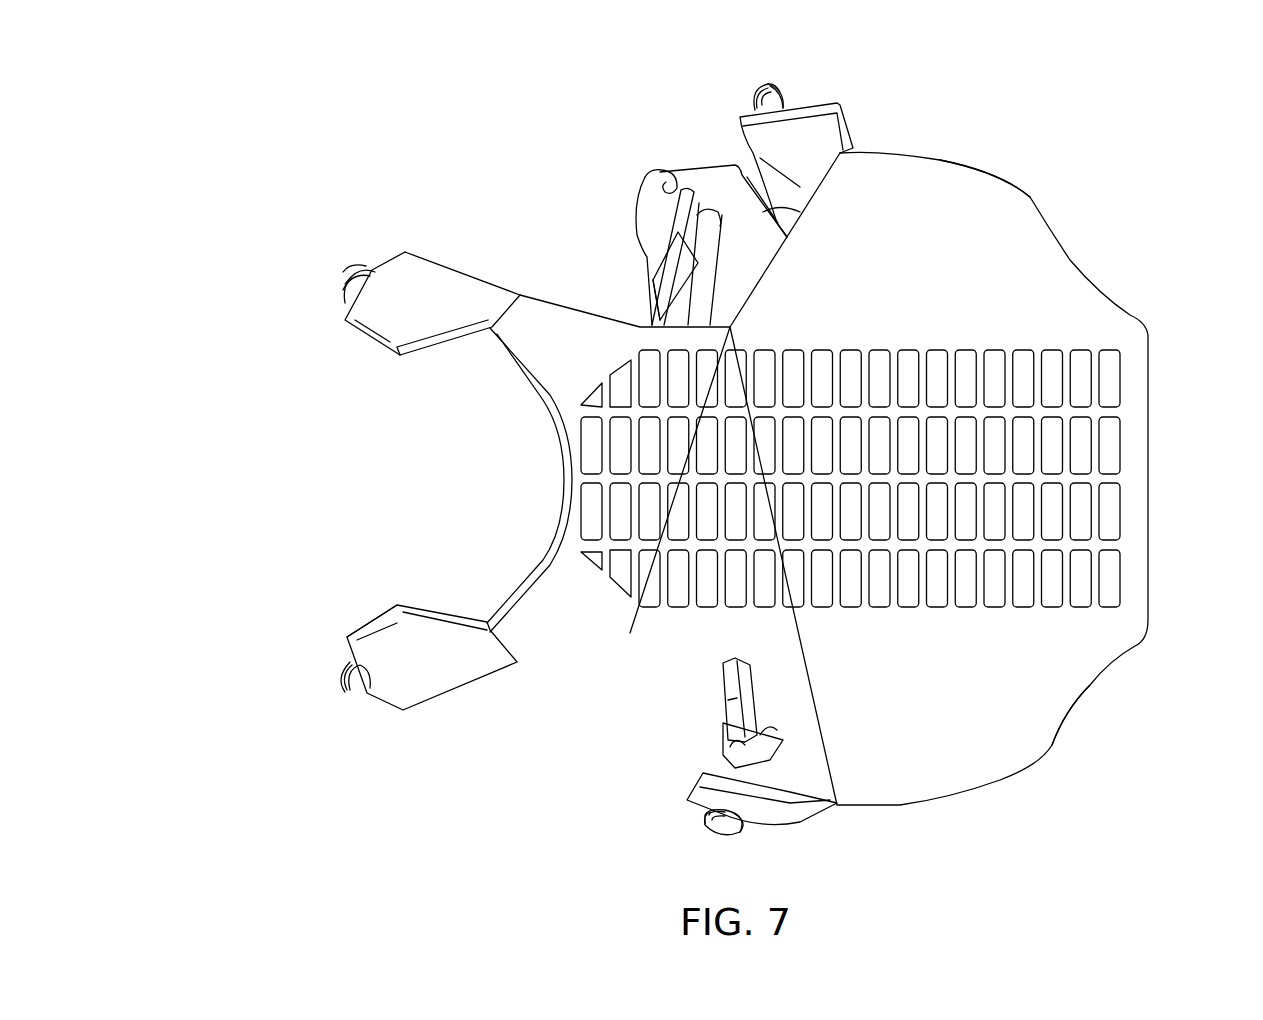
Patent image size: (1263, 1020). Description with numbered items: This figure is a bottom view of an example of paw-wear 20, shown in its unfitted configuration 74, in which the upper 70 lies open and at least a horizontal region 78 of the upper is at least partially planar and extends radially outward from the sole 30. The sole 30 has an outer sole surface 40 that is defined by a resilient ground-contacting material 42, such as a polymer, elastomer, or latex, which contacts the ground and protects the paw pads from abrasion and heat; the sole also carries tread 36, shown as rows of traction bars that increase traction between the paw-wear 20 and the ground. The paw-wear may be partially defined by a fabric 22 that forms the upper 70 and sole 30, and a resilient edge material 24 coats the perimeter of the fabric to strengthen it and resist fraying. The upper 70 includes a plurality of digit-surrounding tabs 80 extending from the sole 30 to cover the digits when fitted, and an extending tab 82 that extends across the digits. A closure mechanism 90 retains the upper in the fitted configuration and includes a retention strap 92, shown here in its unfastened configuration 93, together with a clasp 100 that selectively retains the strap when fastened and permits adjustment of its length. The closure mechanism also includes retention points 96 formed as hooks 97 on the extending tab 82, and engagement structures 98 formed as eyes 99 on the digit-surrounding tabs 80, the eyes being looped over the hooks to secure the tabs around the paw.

The paw-wear 20 is at (1199, 179).
The sole 30 is at (1038, 187).
The outer sole surface 40 is at (1036, 267).
The resilient ground-contacting material 42 is at (1020, 665).
The tread 36 is at (1080, 592).
The resilient edge material 24 is at (530, 377).
The unfitted configuration 74 is at (286, 455).
The upper 70 is at (409, 214).
The fabric 22 is at (463, 300).
The horizontal region 78 is at (449, 232).
The digit-surrounding tab 80 is at (349, 347).
The engagement structure 98 is at (360, 257).
The eye 99 is at (336, 294).
The closure mechanism 90 is at (334, 279).
The extending tab 82 is at (810, 135).
The retention strap 92 is at (647, 168).
The unfastened configuration 93 is at (596, 177).
The clasp 100 is at (639, 285).
The retention point 96 is at (775, 74).
The hook 97 is at (791, 86).